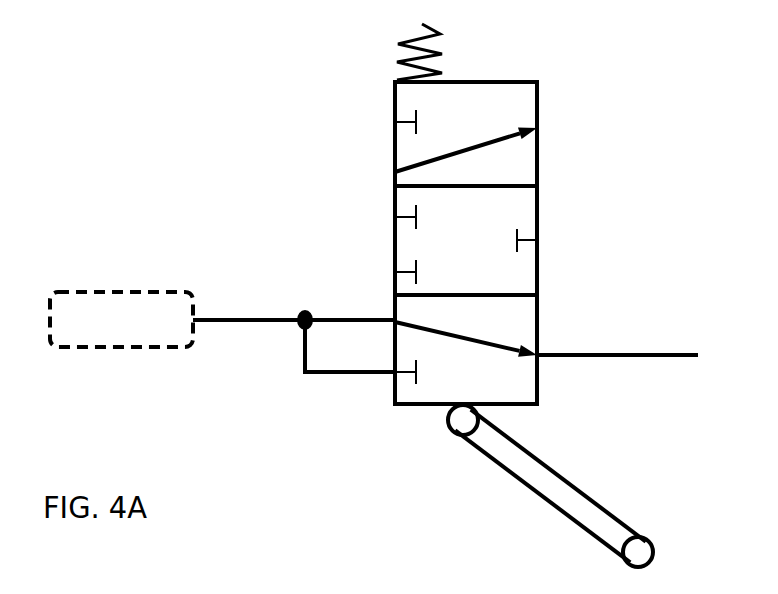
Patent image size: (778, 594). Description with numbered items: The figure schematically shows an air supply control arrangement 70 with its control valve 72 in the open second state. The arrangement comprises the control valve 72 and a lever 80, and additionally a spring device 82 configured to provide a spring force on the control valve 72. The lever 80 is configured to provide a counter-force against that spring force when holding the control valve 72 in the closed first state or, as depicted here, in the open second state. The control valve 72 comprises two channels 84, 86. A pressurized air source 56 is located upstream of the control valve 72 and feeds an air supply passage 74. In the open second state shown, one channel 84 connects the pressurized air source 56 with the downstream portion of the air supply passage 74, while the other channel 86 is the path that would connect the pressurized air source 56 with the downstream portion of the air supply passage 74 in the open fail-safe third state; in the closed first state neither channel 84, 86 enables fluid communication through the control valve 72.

The air supply control arrangement 70 is at (375, 290).
The control valve 72 is at (394, 102).
The air supply passage 74 is at (265, 318).
The pressurized air source 56 is at (125, 290).
The lever 80 is at (530, 485).
The spring device 82 is at (437, 45).
The channel 84 is at (482, 340).
The channel 86 is at (477, 150).